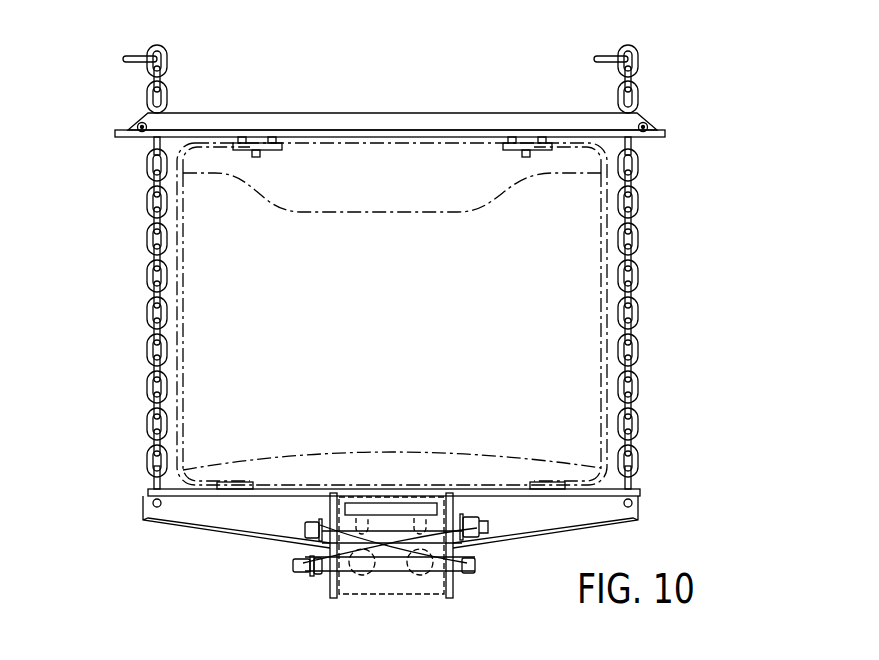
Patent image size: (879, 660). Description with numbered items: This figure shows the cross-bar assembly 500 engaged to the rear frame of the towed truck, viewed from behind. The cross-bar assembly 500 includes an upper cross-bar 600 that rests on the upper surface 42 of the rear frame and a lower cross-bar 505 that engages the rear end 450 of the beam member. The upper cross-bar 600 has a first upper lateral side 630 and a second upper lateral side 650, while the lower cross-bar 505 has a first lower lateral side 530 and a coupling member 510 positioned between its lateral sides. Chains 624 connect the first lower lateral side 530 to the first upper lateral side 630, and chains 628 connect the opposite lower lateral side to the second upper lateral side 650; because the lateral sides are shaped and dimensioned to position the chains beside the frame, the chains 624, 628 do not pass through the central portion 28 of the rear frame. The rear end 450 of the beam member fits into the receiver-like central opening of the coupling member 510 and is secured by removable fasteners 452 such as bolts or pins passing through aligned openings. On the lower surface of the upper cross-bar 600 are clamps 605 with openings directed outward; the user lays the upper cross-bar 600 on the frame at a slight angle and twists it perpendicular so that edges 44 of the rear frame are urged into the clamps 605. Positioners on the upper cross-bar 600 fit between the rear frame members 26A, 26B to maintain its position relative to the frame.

The cross-bar assembly 500 is at (730, 93).
The second upper lateral side 650 is at (560, 117).
The upper cross-bar 600 is at (369, 120).
The first upper lateral side 630 is at (163, 122).
The upper surface 42 is at (208, 137).
The edges 44 is at (244, 140).
The central portion 28 is at (428, 158).
The clamps 605 is at (278, 150).
The rear frame member 26A is at (177, 246).
The rear frame member 26B is at (607, 226).
The chains 624 is at (150, 314).
The chains 628 is at (639, 283).
The first lower lateral side 530 is at (200, 514).
The lower cross-bar 505 is at (547, 518).
The rear end 450 is at (380, 588).
The coupling member 510 is at (454, 586).
The removable fasteners 452 is at (301, 571).